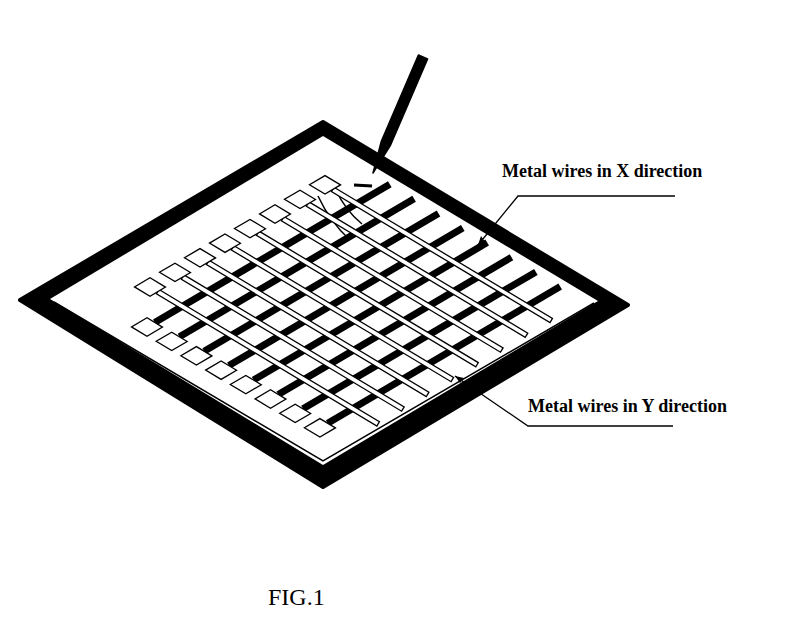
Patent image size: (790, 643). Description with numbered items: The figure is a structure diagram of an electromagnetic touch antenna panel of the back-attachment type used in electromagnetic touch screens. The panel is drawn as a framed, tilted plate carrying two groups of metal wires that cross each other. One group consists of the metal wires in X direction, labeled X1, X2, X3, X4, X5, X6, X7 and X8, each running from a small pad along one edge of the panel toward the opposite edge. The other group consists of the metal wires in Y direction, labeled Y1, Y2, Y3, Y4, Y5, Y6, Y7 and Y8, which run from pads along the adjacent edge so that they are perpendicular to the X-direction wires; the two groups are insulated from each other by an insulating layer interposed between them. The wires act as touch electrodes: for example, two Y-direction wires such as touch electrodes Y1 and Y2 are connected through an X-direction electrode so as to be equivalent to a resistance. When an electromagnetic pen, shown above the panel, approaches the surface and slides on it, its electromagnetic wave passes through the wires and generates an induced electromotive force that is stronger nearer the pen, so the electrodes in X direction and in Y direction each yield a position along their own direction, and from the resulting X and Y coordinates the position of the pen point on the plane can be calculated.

The metal wire in X direction 1 X1 is at (257, 268).
The metal wire in X direction 2 X2 is at (282, 282).
The metal wire in X direction 3 X3 is at (306, 297).
The metal wire in X direction 4 X4 is at (331, 311).
The metal wire in X direction 5 X5 is at (356, 326).
The metal wire in X direction 6 X6 is at (380, 340).
The metal wire in X direction 7 X7 is at (404, 355).
The metal wire in X direction 8 X8 is at (429, 370).
The touch electrode Y1 is at (251, 347).
The touch electrode Y2 is at (276, 332).
The metal wire in Y direction 3 Y3 is at (301, 318).
The metal wire in Y direction 4 Y4 is at (326, 303).
The metal wire in Y direction 5 Y5 is at (351, 289).
The metal wire in Y direction 6 Y6 is at (375, 274).
The metal wire in Y direction 7 Y7 is at (400, 259).
The metal wire in Y direction 8 Y8 is at (425, 245).